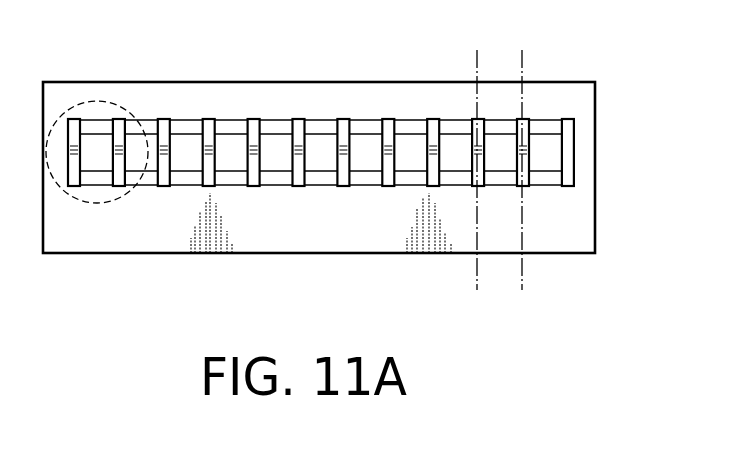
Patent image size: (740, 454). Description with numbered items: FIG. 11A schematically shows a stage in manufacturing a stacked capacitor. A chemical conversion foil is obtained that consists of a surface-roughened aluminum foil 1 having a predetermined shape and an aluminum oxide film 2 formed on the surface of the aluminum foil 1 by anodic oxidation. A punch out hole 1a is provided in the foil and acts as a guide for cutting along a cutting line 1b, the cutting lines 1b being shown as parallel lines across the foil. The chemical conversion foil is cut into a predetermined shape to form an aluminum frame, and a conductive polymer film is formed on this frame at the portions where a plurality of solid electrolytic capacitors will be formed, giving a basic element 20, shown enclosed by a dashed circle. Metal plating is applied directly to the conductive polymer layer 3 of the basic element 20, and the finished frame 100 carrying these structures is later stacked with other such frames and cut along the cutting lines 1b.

The frame 100 is at (325, 159).
The aluminum foil 1 is at (182, 82).
The punch out hole 1a is at (77, 118).
The cutting line 1b is at (522, 68).
The aluminum oxide film 2 is at (321, 158).
The conductive polymer layer 3 is at (98, 148).
The basic element 20 is at (88, 205).